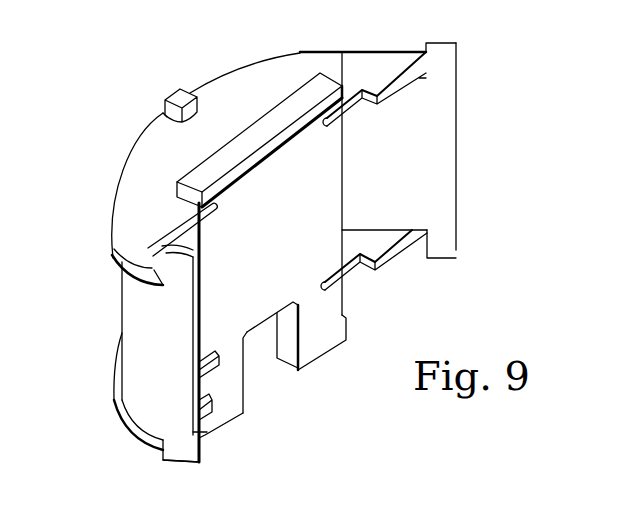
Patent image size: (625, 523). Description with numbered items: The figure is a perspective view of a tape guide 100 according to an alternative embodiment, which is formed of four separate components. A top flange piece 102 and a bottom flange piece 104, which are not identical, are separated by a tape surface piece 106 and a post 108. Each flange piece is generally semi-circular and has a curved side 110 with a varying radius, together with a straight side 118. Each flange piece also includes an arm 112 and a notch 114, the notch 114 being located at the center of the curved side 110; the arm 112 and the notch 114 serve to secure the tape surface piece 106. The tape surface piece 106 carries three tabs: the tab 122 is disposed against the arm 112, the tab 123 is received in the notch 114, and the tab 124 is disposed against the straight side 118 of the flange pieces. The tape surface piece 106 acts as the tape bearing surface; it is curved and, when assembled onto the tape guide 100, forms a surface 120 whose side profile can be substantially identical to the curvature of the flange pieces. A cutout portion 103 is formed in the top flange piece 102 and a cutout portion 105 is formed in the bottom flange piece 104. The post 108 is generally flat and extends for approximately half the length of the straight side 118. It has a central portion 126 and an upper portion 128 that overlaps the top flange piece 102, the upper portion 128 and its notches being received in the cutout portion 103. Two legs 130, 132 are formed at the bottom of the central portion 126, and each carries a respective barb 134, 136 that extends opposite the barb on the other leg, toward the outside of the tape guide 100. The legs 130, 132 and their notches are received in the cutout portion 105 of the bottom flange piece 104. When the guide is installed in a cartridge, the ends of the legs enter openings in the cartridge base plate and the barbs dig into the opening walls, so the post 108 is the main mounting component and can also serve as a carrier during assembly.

The tape guide 100 is at (458, 149).
The top flange piece 102 is at (280, 70).
The cutout portion 103 is at (216, 206).
The bottom flange piece 104 is at (381, 243).
The cutout portion 105 is at (215, 365).
The tape surface piece 106 is at (127, 323).
The post 108 is at (247, 336).
The curved side 110 is at (108, 230).
The arm 112 is at (118, 262).
The notch 114 is at (163, 116).
The straight side 118 is at (383, 98).
The surface 120 is at (130, 400).
The tab 122 is at (178, 460).
The tab 123 is at (180, 96).
The tab 124 is at (443, 59).
The central portion 126 is at (335, 182).
The upper portion 128 is at (246, 140).
The leg 130 is at (230, 417).
The leg 132 is at (322, 347).
The barb 134 is at (205, 435).
The barb 136 is at (344, 327).